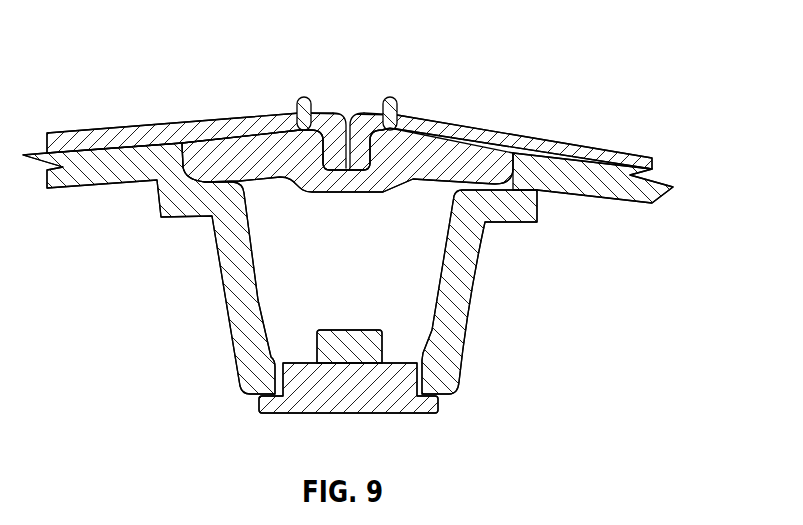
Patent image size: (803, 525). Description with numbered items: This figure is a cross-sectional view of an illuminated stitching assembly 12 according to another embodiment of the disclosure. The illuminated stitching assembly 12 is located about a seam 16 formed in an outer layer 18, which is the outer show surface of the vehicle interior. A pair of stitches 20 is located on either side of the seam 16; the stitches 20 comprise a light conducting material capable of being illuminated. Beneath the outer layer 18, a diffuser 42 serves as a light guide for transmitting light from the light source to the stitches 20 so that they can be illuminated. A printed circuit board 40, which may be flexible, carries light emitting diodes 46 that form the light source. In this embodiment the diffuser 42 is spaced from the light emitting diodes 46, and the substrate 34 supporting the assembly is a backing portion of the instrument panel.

The illuminated stitching assembly 12 is at (136, 38).
The seam 16 is at (347, 109).
The outer layer 18 is at (535, 137).
The stitches 20 is at (303, 97).
The substrate 34 is at (457, 285).
The printed circuit board 40 is at (335, 388).
The diffuser 42 is at (478, 158).
The light emitting diodes 46 is at (345, 345).